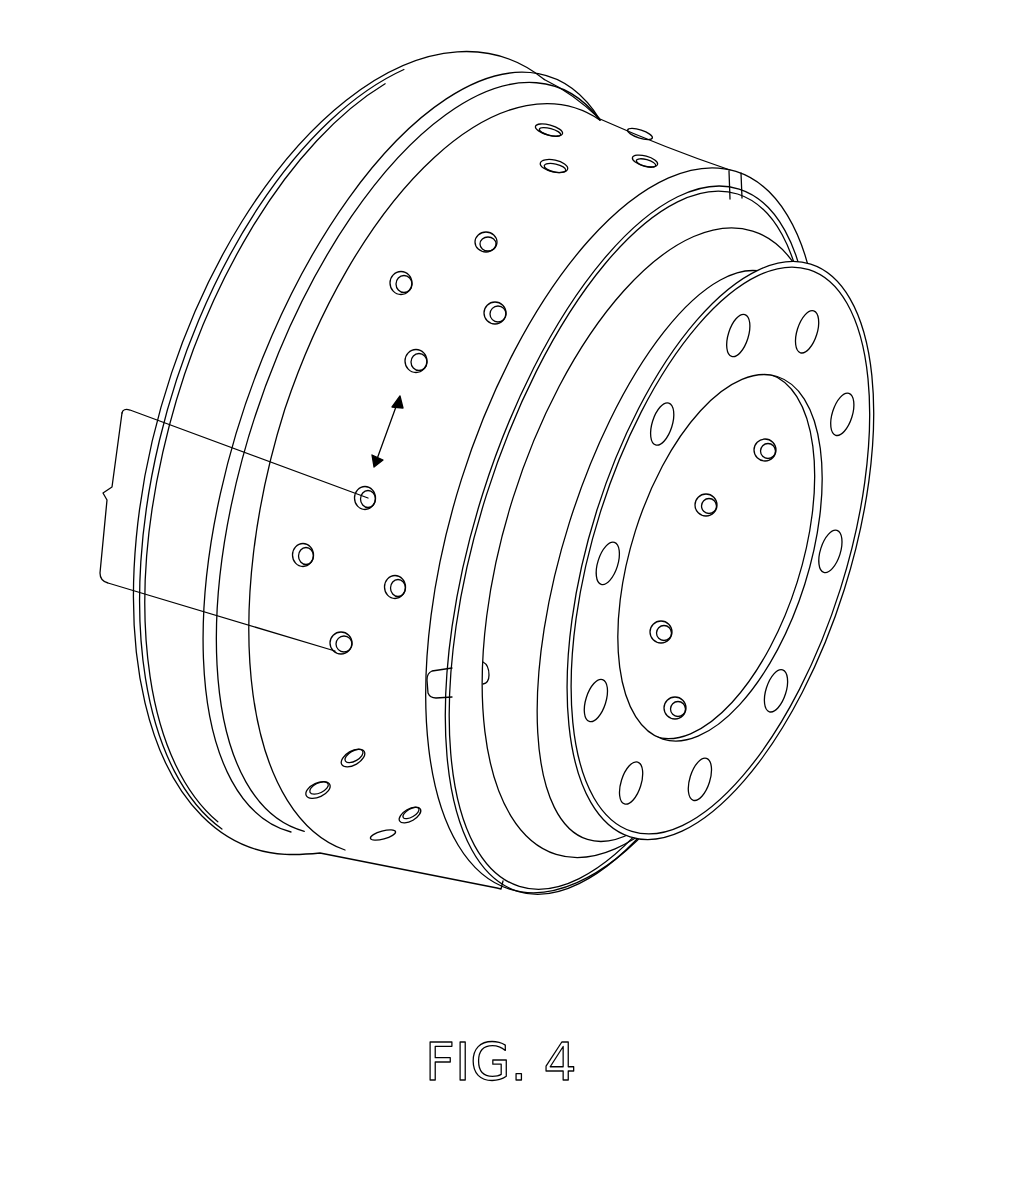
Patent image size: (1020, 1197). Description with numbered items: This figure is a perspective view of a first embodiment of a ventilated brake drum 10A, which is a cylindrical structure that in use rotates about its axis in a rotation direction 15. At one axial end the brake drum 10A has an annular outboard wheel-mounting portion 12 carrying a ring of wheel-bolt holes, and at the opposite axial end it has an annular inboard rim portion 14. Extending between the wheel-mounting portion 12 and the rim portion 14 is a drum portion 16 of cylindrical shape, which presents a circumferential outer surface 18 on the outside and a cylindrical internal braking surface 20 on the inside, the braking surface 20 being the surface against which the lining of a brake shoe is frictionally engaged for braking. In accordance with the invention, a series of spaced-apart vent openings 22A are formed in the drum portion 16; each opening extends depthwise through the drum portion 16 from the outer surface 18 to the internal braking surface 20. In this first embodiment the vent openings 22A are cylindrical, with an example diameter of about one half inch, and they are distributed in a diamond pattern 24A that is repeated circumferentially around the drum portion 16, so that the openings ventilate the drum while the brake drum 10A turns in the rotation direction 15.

The brake drum 10A is at (819, 73).
The outboard wheel-mounting portion 12 is at (713, 814).
The inboard rim portion 14 is at (262, 237).
The rotation direction 15 is at (386, 429).
The drum portion 16 is at (497, 887).
The circumferential outer surface 18 is at (356, 415).
The internal braking surface 20 is at (714, 475).
The vent openings 22A is at (490, 236).
The diamond pattern 24A is at (215, 530).